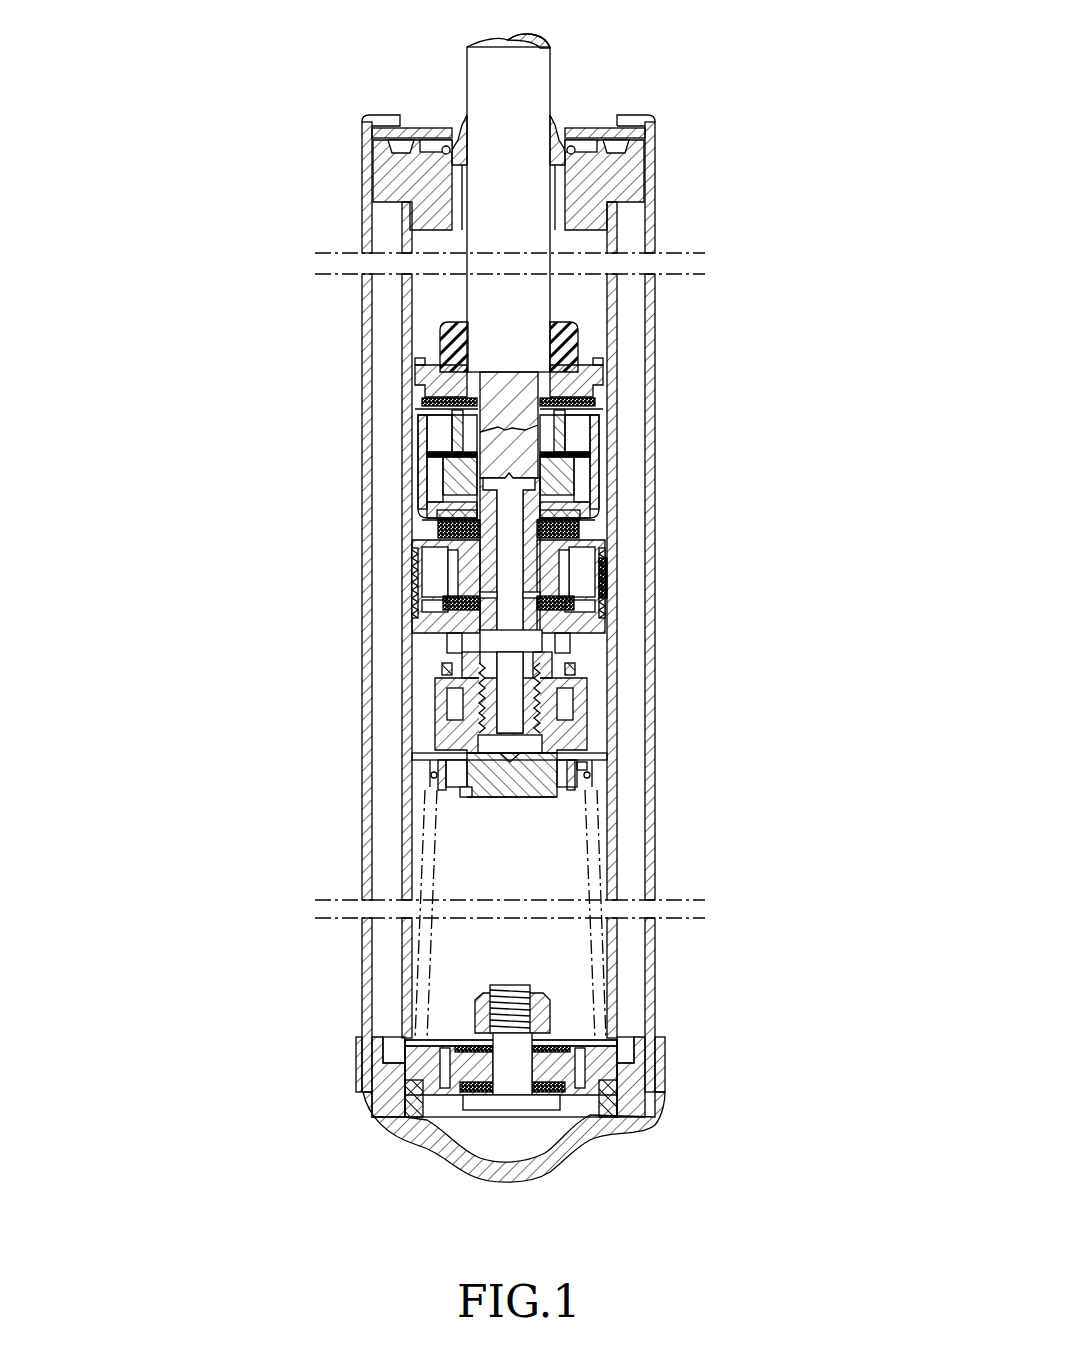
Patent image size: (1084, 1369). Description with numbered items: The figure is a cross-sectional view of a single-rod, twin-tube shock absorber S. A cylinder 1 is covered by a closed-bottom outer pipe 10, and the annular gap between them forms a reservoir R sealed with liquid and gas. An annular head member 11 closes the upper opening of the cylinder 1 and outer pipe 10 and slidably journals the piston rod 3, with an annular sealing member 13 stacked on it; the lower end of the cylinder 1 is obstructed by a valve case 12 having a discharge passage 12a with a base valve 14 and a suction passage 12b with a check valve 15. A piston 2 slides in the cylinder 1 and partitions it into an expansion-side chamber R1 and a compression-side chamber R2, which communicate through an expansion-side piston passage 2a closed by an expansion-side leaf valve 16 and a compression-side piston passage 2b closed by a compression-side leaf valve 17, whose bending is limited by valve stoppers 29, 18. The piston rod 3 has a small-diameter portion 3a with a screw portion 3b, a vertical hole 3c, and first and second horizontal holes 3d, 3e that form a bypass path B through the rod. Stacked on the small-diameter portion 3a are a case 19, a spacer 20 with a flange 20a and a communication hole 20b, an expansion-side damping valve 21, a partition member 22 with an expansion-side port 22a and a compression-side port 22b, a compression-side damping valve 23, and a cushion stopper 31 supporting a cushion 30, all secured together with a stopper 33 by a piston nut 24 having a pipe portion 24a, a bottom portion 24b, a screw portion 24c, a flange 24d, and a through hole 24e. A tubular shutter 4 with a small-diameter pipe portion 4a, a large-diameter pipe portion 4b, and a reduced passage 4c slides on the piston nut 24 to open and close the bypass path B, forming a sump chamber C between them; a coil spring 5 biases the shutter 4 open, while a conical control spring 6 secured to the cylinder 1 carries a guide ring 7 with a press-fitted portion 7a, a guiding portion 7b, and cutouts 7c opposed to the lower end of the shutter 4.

The shock absorber S is at (340, 105).
The cylinder 1 is at (655, 300).
The piston 2 is at (545, 560).
The expansion-side piston passage 2a is at (415, 580).
The compression-side piston passage 2b is at (604, 585).
The piston rod 3 is at (558, 70).
The small-diameter portion 3a is at (470, 545).
The screw portion 3b is at (560, 735).
The vertical hole 3c is at (480, 598).
The first horizontal hole 3d is at (586, 470).
The second horizontal hole 3e is at (470, 660).
The shutter 4 is at (596, 683).
The small-diameter pipe portion 4a is at (452, 682).
The large-diameter pipe portion 4b is at (450, 740).
The reduced passage 4c is at (570, 665).
The coil spring 5 is at (595, 620).
The control spring 6 is at (525, 800).
The guide ring 7 is at (600, 775).
The press-fitted portion 7a is at (465, 805).
The guiding portion 7b is at (590, 788).
The cutouts 7c is at (437, 785).
The outer pipe 10 is at (372, 305).
The head member 11 is at (640, 165).
The valve case 12 is at (618, 1047).
The discharge passage 12a is at (603, 1117).
The suction passage 12b is at (395, 1052).
The sealing member 13 is at (590, 125).
The base valve 14 is at (440, 1113).
The check valve 15 is at (560, 1003).
The expansion-side leaf valve 16 is at (425, 615).
The compression-side leaf valve 17 is at (600, 522).
The valve stopper 18 is at (440, 520).
The case 19 is at (602, 490).
The spacer 20 is at (597, 430).
The flange 20a is at (430, 462).
The communication hole 20b is at (450, 500).
The expansion-side damping valve 21 is at (452, 440).
The partition member 22 is at (603, 405).
The expansion-side port 22a is at (415, 405).
The compression-side port 22b is at (620, 404).
The compression-side damping valve 23 is at (605, 372).
The piston nut 24 is at (500, 800).
The pipe portion 24a is at (442, 710).
The bottom portion 24b is at (597, 850).
The screw portion 24c is at (628, 755).
The flange 24d is at (445, 770).
The through hole 24e is at (590, 650).
The valve stopper 29 is at (608, 597).
The cushion 30 is at (578, 340).
The cushion stopper 31 is at (420, 385).
The stopper 33 is at (455, 640).
The reservoir R is at (385, 224).
The expansion-side chamber R1 is at (590, 243).
The compression-side chamber R2 is at (570, 947).
The bypass path B is at (628, 540).
The sump chamber C is at (605, 735).